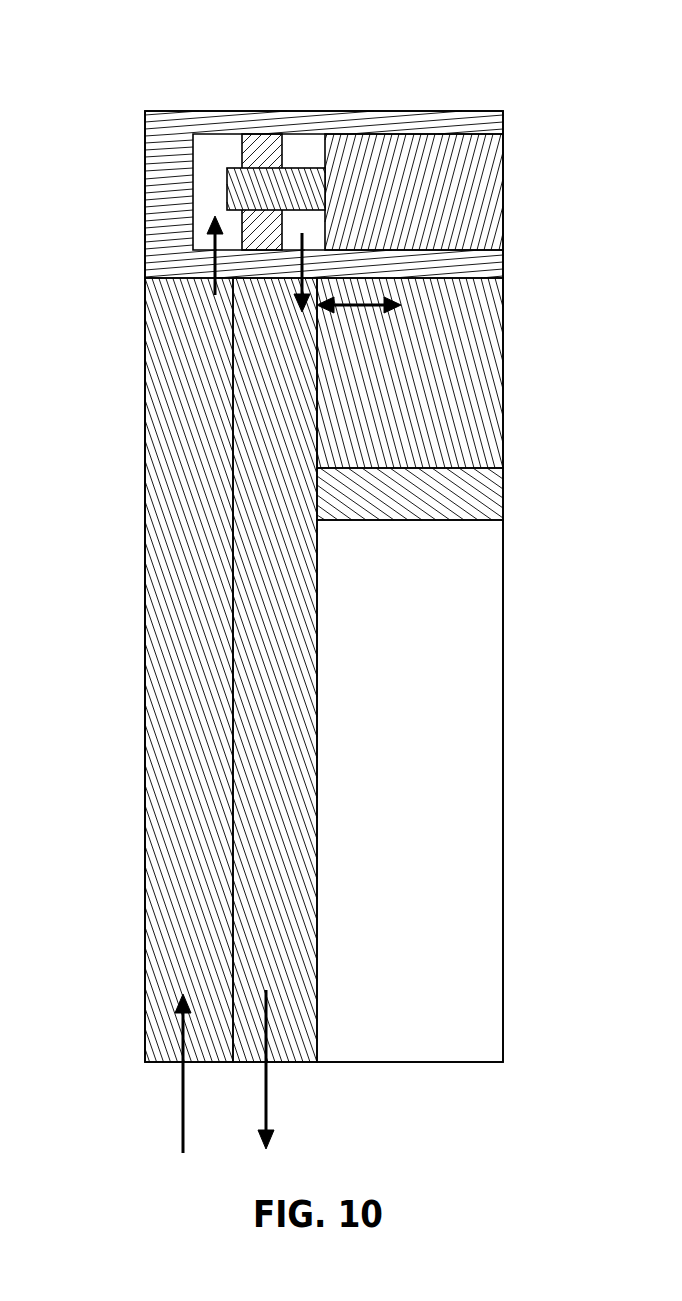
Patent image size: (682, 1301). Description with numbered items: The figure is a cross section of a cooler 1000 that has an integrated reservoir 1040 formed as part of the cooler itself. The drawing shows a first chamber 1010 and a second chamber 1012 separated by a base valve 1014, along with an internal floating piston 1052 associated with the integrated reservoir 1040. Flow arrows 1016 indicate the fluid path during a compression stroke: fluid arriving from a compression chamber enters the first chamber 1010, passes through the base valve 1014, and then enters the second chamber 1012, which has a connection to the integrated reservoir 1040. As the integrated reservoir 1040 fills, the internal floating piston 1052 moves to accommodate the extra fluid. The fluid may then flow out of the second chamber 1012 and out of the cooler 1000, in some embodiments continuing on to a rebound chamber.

The cooler 1000 is at (86, 59).
The first chamber 1010 is at (173, 474).
The second chamber 1012 is at (277, 594).
The base valve 1014 is at (388, 203).
The flow arrows 1016 is at (268, 1104).
The integrated reservoir 1040 is at (477, 408).
The internal floating piston 1052 is at (477, 495).